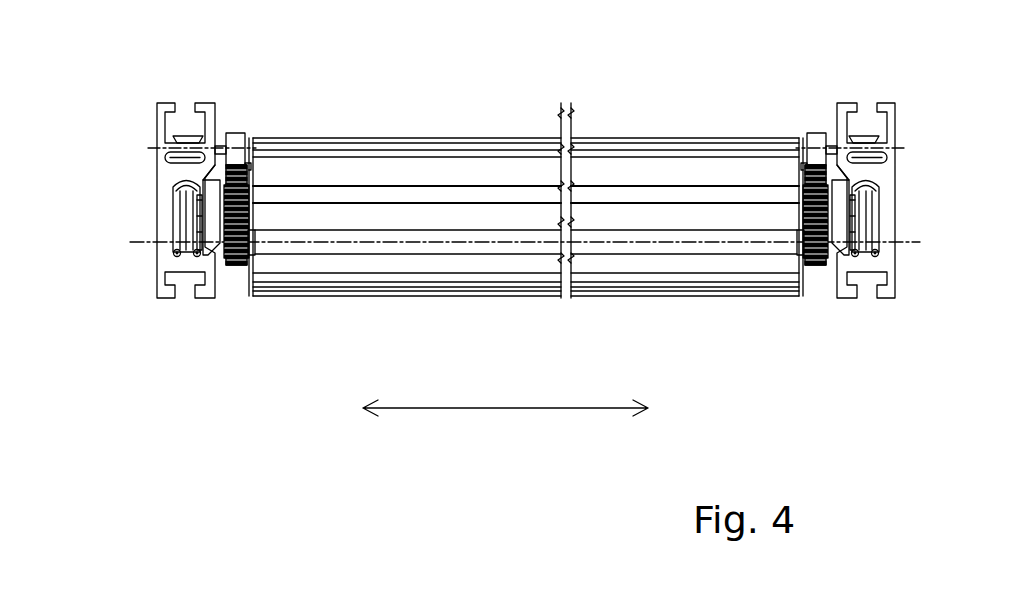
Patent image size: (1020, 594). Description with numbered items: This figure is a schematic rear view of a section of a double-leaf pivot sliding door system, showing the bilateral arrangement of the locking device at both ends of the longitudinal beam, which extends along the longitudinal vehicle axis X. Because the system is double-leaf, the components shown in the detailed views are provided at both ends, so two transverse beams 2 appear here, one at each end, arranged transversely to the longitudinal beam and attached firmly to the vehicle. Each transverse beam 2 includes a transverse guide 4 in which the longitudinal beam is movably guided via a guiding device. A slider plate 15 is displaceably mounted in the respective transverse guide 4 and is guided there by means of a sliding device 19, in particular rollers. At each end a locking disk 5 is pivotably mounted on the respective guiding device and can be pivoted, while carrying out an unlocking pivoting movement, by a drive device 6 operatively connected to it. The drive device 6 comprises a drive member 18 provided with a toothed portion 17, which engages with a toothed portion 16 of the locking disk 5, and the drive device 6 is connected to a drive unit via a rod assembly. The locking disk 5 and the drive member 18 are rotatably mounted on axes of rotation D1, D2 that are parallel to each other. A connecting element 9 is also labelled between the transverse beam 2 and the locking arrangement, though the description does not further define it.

The transverse beam 2 is at (168, 170).
The transverse guide 4 is at (190, 218).
The locking disk 5 is at (237, 138).
The drive device 6 is at (340, 357).
The connecting piece 9 is at (221, 152).
The slider plate 15 is at (210, 250).
The toothed portion of the locking disk 16 is at (247, 174).
The toothed portion of the drive member 17 is at (235, 268).
The drive member 18 is at (240, 266).
The sliding device 19 is at (190, 232).
The axis of rotation D1 is at (173, 200).
The axis of rotation D2 is at (370, 242).
The longitudinal vehicle axis X is at (505, 432).